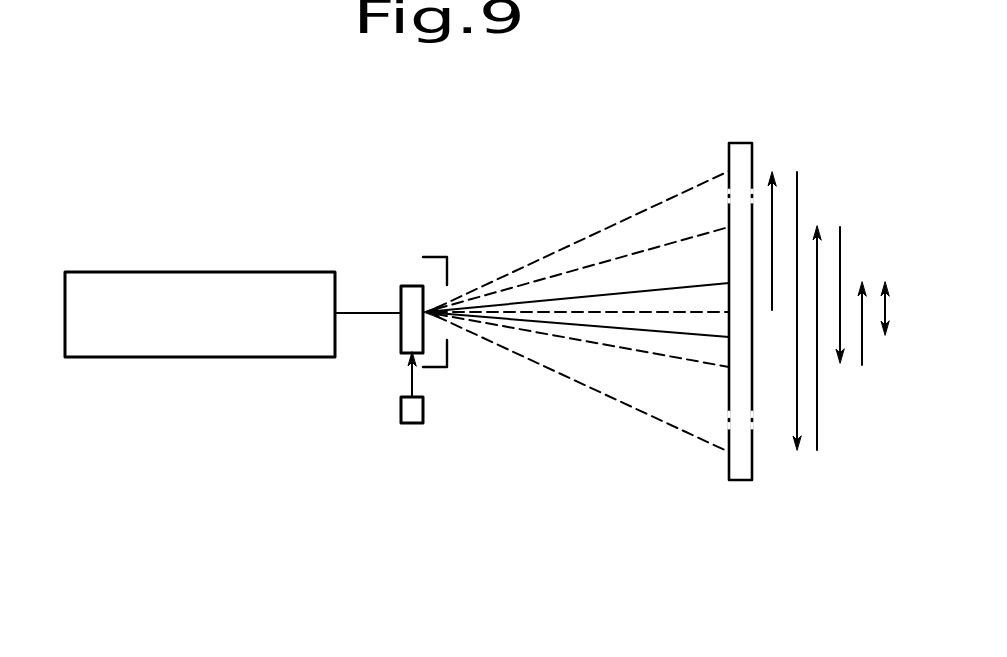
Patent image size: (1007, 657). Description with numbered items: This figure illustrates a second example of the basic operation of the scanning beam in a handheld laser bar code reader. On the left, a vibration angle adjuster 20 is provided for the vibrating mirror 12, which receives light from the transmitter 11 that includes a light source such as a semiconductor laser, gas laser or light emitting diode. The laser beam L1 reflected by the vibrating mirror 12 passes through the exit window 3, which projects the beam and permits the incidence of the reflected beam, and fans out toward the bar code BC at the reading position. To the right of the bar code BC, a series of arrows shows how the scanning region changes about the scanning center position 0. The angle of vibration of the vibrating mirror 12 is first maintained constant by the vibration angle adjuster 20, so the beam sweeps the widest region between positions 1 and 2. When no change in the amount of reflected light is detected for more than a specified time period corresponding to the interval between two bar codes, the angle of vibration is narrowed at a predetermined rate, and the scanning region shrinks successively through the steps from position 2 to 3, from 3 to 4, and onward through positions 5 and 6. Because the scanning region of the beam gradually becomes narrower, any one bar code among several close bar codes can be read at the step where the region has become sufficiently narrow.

The vibration angle adjuster 20 is at (317, 272).
The vibrating mirror 12 is at (412, 286).
The exit window 3 is at (448, 272).
The transmitter 11 is at (423, 410).
The laser beam L1 is at (678, 194).
The bar code BC is at (754, 468).
The scanning center position 0 is at (770, 327).
The scanning position 1 is at (771, 222).
The scanning position 2 is at (794, 329).
The scanning position 4 is at (839, 314).
The scanning position 5 is at (857, 305).
The scanning position 6 is at (883, 328).